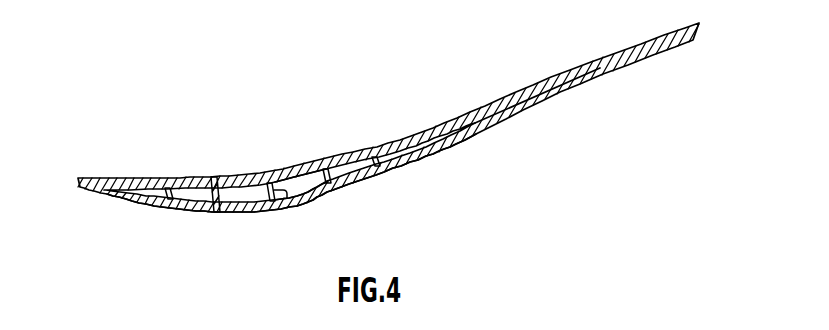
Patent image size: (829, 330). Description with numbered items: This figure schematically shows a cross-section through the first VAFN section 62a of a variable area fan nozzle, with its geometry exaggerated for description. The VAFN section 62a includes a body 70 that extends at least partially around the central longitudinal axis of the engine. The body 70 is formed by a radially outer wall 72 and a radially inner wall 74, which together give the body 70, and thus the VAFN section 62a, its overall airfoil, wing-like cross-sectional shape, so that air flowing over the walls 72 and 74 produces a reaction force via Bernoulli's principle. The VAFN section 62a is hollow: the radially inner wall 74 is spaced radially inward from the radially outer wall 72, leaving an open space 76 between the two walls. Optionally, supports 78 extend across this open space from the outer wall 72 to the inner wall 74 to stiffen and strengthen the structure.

The first VAFN section 62a is at (88, 231).
The body 70 is at (219, 165).
The radially outer wall 72 is at (223, 213).
The radially inner wall 74 is at (275, 178).
The open space 76 is at (307, 182).
The supports 78 is at (282, 189).